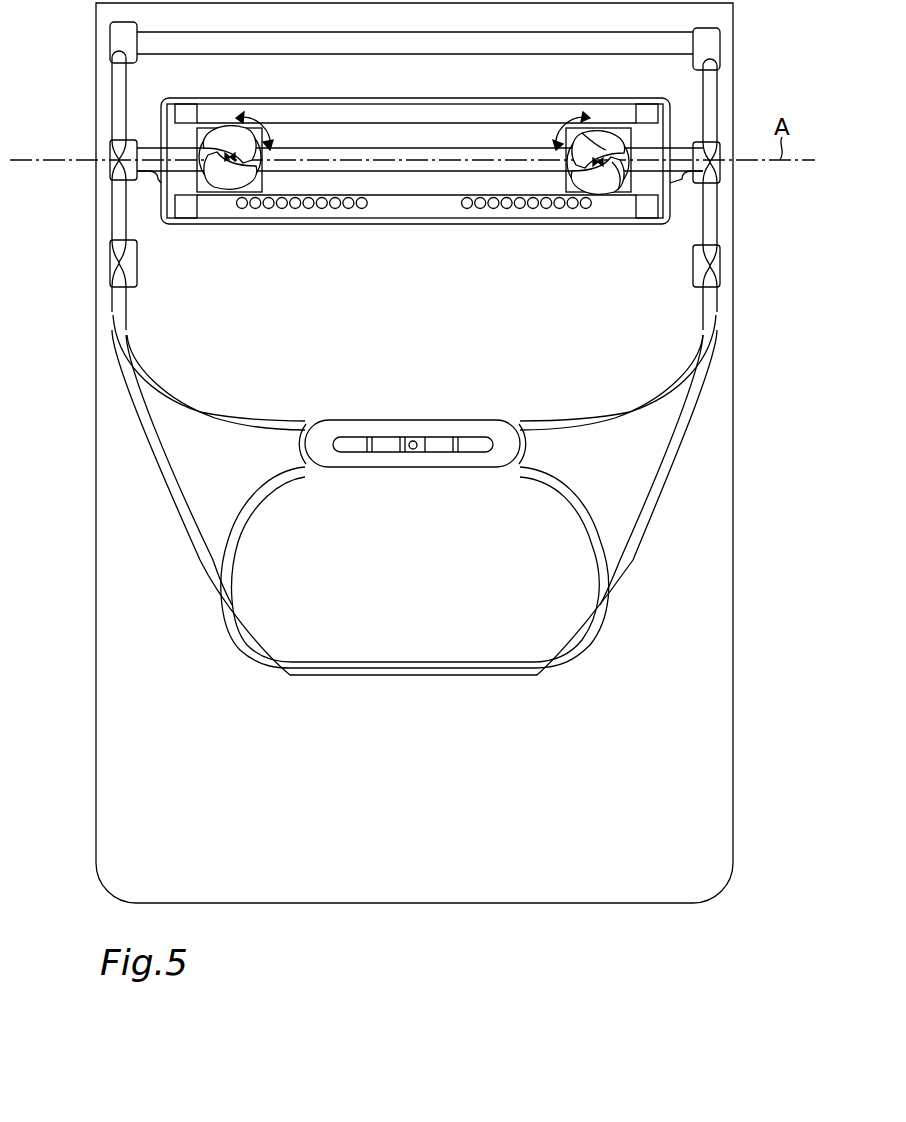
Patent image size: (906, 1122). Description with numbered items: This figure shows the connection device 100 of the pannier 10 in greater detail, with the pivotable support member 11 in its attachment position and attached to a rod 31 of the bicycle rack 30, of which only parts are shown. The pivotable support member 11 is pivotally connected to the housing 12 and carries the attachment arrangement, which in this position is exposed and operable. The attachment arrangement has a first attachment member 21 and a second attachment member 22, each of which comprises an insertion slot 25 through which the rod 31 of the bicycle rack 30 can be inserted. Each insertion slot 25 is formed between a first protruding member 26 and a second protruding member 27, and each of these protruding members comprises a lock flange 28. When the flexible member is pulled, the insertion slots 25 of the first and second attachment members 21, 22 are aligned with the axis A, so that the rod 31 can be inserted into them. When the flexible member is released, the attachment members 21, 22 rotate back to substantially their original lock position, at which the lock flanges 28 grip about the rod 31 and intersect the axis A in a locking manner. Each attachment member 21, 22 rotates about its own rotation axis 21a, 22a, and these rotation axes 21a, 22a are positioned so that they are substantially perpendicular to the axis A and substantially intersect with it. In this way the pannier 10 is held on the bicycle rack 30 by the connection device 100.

The pannier 10 is at (428, 756).
The pivotable support member 11 is at (357, 178).
The housing 12 is at (468, 226).
The first attachment member 21 is at (207, 178).
The rotation axis of the first attachment member 21a is at (204, 148).
The second attachment member 22 is at (606, 200).
The rotation axis of the second attachment member 22a is at (627, 156).
The insertion slot 25 is at (258, 187).
The first protruding member 26 is at (593, 137).
The second protruding member 27 is at (618, 180).
The lock flange 28 is at (575, 167).
The bicycle rack 30 is at (398, 44).
The rod 31 is at (390, 163).
The connection device 100 is at (680, 508).